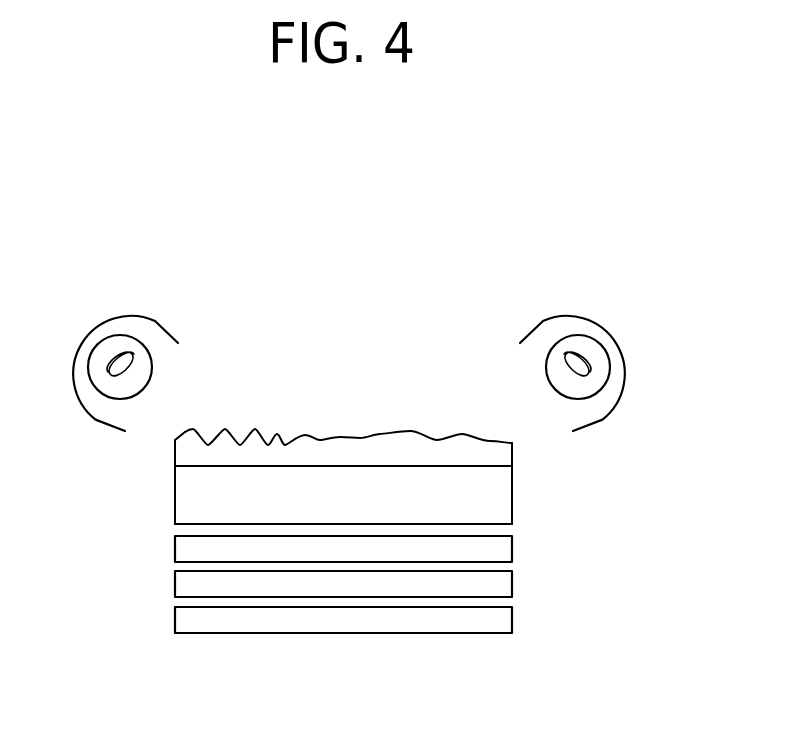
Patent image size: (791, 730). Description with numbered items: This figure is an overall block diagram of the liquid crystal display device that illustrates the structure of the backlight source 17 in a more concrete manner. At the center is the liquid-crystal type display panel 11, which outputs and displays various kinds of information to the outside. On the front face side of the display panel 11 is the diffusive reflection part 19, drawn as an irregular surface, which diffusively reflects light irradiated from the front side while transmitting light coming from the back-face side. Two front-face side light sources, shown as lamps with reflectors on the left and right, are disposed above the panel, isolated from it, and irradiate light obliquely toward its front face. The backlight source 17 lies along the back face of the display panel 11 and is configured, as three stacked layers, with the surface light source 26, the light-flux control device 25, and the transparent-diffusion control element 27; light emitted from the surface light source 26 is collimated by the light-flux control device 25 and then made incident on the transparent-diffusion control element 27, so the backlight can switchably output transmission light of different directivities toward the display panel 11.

The diffusive reflection part 19 is at (368, 450).
The display panel 11 is at (512, 490).
The backlight source 17 is at (353, 624).
The transparent-diffusion control element 27 is at (175, 553).
The light-flux control device 25 is at (175, 590).
The surface light source 26 is at (360, 625).